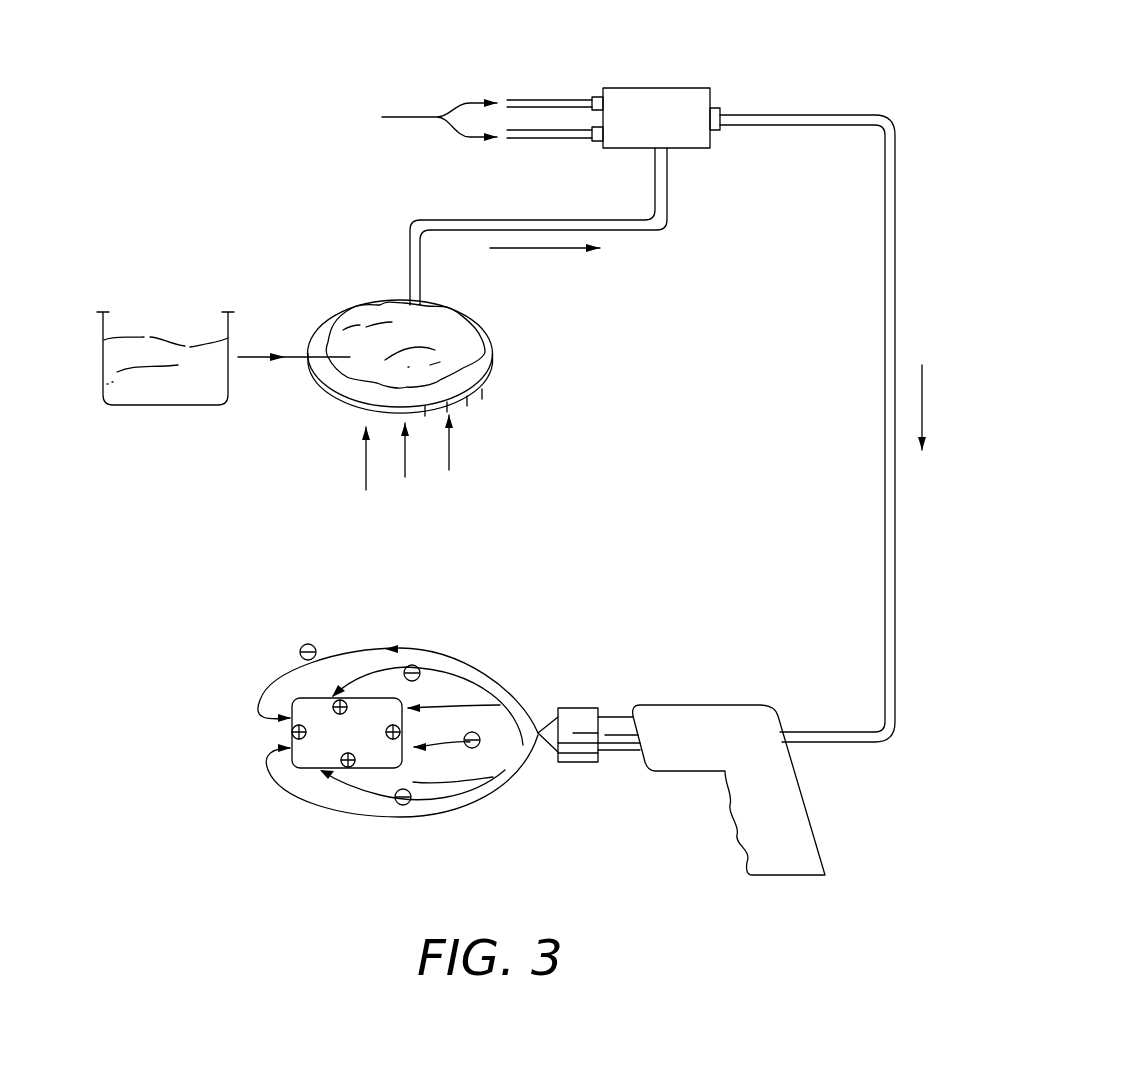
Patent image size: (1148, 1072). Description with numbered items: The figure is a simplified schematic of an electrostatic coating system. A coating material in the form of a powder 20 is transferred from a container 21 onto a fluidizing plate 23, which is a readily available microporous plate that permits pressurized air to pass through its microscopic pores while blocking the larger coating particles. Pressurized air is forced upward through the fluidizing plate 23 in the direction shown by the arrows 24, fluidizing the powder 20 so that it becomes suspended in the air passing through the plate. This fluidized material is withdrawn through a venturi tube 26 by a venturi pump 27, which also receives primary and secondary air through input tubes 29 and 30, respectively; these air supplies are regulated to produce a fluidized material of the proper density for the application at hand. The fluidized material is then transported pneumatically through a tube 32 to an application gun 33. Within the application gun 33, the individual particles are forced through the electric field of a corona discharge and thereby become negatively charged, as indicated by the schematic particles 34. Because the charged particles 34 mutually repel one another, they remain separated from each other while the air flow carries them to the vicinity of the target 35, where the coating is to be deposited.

The powder 20 is at (150, 345).
The container 21 is at (185, 413).
The fluidizing plate 23 is at (477, 390).
The arrows 24 is at (449, 456).
The venturi tube 26 is at (410, 228).
The venturi pump 27 is at (703, 98).
The input tube 29 is at (540, 139).
The input tube 30 is at (549, 99).
The tube 32 is at (897, 250).
The application gun 33 is at (787, 797).
The schematic particles 34 is at (316, 650).
The target 35 is at (312, 752).